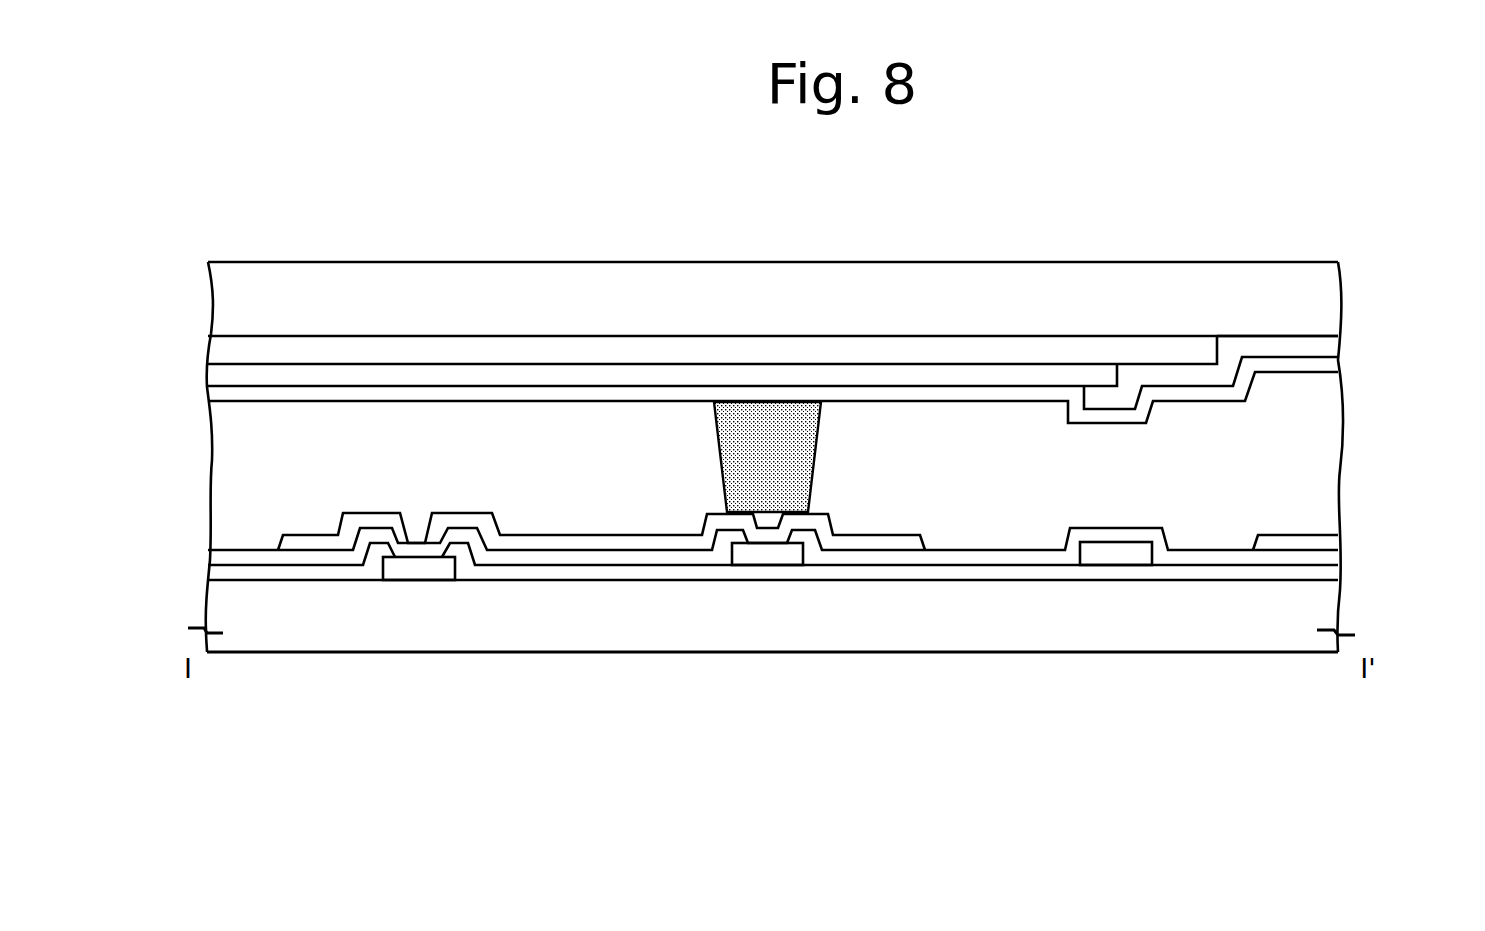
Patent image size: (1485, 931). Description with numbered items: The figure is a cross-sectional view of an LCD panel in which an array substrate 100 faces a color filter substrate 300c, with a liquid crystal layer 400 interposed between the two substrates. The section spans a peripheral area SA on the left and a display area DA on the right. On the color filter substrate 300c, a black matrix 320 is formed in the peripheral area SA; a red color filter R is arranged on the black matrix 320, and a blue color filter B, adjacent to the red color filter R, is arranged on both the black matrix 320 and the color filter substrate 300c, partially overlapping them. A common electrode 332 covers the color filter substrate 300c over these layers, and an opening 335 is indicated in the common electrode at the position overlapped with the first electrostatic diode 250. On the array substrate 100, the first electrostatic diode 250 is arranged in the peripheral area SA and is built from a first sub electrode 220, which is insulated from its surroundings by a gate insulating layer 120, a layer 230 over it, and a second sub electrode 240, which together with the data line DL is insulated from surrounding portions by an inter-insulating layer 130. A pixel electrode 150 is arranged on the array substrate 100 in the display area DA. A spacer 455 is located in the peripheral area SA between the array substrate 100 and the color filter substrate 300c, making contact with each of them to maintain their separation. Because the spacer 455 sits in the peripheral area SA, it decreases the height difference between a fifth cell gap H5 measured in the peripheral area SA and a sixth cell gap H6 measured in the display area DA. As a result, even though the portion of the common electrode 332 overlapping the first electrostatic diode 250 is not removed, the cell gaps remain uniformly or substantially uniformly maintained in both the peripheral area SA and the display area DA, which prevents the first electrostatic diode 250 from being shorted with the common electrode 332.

The color filter substrate 300c is at (1330, 302).
The black matrix 320 is at (728, 344).
The red color filter R is at (1022, 370).
The blue color filter B is at (1243, 352).
The common electrode 332 is at (1326, 370).
The liquid crystal layer 400 is at (216, 468).
The opening 335 is at (545, 406).
The fifth cell gap H5 is at (707, 514).
The spacer 455 is at (800, 447).
The sixth cell gap H6 is at (1275, 375).
The pixel electrode 150 is at (1326, 542).
The inter-insulating layer 130 is at (1326, 558).
The gate insulating layer 120 is at (1326, 571).
The array substrate 100 is at (1324, 613).
The first sub electrode 220 is at (420, 574).
The active layer 230 is at (570, 548).
The second sub electrode 240 is at (768, 558).
The first electrostatic diode 250 is at (393, 717).
The data line DL is at (1117, 558).
The peripheral area SA is at (1080, 660).
The display area DA is at (1340, 660).